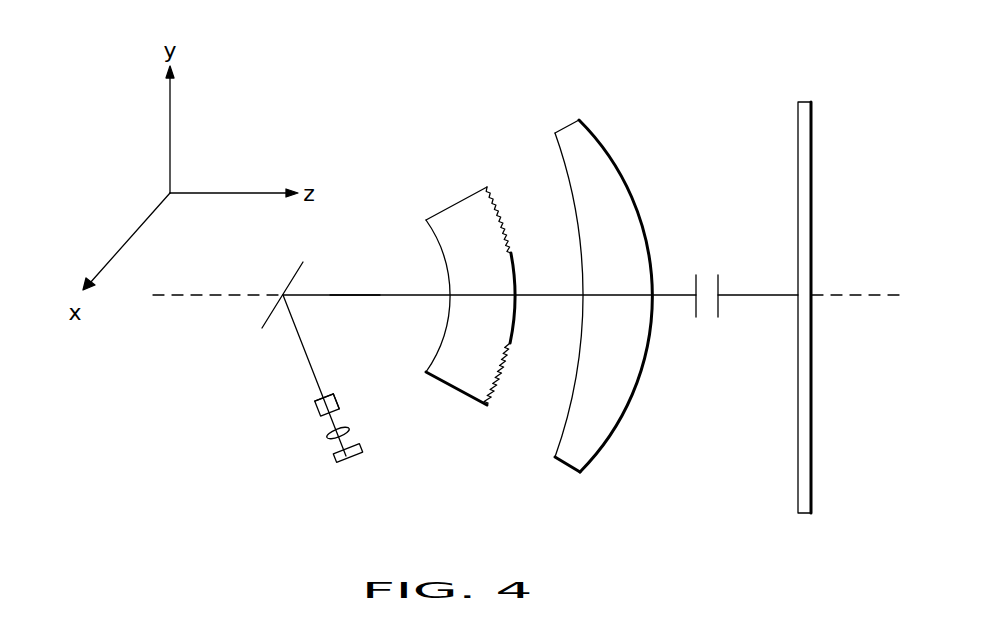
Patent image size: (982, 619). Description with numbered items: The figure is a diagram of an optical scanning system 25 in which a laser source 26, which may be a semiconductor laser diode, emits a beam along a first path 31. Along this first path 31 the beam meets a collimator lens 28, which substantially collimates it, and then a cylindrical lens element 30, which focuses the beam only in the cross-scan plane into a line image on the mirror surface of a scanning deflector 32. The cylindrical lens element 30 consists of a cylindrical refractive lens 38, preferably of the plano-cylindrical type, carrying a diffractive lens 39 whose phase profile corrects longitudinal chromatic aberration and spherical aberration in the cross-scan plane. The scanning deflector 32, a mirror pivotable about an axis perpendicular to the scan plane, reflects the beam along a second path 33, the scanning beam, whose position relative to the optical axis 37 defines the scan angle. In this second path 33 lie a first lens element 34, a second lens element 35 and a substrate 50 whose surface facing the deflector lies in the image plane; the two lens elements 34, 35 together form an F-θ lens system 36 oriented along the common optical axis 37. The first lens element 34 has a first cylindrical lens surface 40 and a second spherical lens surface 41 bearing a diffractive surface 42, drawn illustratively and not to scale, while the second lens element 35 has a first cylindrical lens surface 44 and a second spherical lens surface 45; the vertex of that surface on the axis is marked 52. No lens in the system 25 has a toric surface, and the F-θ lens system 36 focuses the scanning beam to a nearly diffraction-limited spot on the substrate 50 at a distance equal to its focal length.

The optical scanning system 25 is at (577, 527).
The laser source 26 is at (333, 460).
The collimator lens 28 is at (347, 426).
The cylindrical lens element 30 is at (315, 410).
The first path 31 is at (305, 352).
The scanning deflector 32 is at (272, 310).
The second path 33 is at (355, 293).
The first lens element 34 is at (456, 250).
The second lens element 35 is at (603, 270).
The F-θ lens system 36 is at (530, 243).
The optical axis 37 is at (854, 297).
The cylindrical refractive lens 38 is at (340, 410).
The diffractive lens 39 is at (332, 397).
The first cylindrical lens surface 40 is at (428, 232).
The second spherical lens surface 41 is at (452, 206).
The diffractive surface 42 is at (498, 213).
The first cylindrical lens surface 44 is at (567, 420).
The second spherical lens surface 45 is at (621, 168).
The substrate 50 is at (798, 132).
The surface vertex 52 is at (652, 296).